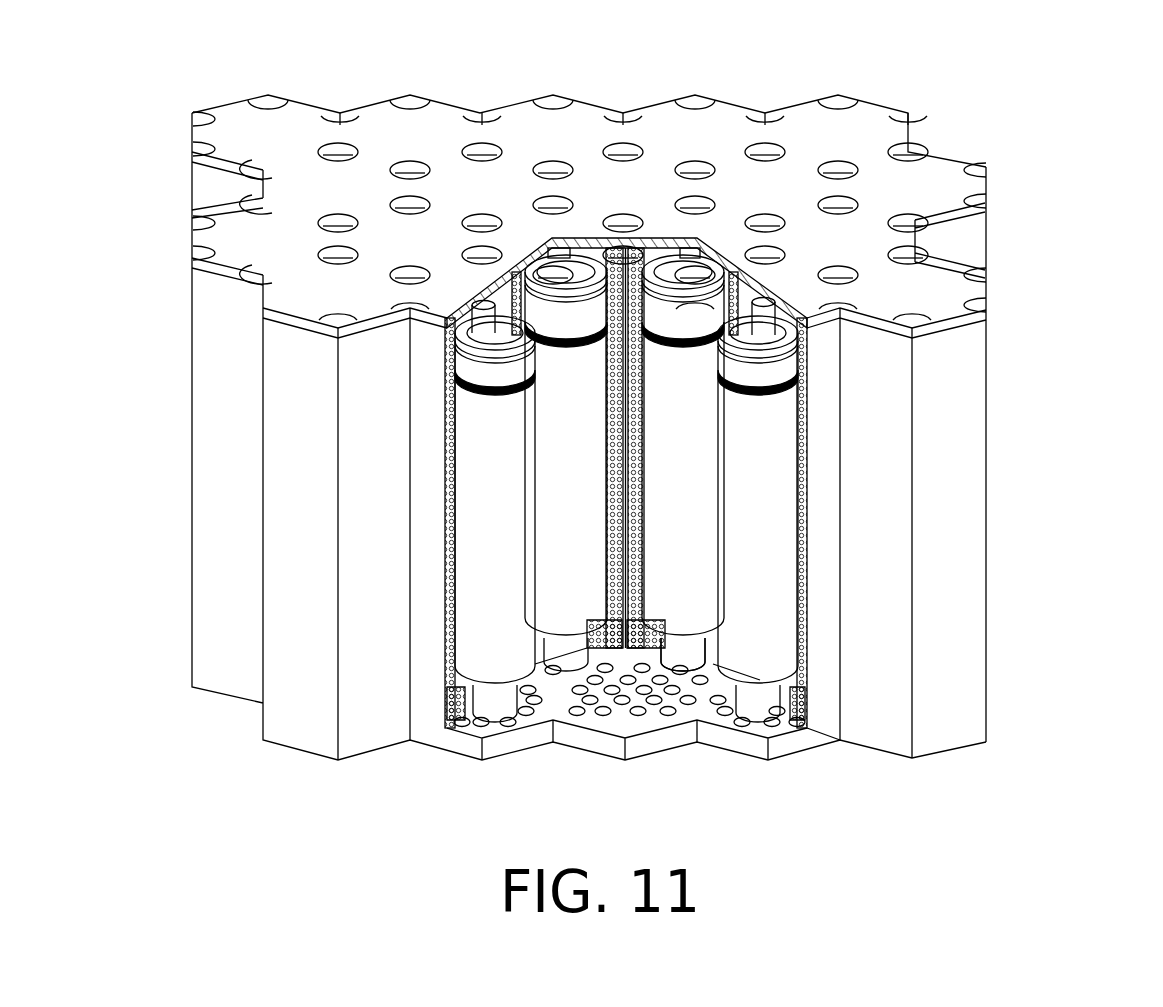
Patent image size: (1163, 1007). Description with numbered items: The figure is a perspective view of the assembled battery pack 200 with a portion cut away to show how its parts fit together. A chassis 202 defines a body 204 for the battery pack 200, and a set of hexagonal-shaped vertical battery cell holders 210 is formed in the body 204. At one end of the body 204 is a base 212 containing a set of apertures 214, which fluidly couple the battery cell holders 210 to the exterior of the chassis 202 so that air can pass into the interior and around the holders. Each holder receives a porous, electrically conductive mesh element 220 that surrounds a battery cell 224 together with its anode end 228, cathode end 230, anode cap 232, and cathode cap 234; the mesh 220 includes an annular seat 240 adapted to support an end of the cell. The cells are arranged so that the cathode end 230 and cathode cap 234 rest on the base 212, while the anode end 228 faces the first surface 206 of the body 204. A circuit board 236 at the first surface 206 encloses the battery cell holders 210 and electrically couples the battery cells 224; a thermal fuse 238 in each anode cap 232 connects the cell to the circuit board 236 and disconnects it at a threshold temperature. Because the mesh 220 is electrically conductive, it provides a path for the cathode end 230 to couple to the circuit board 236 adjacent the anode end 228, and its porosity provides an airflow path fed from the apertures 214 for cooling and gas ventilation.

The battery pack 200 is at (92, 63).
The chassis 202 is at (978, 383).
The body 204 is at (935, 495).
The first surface 206 is at (448, 322).
The vertical battery cell holders 210 is at (615, 350).
The base 212 is at (513, 745).
The apertures 214 is at (340, 150).
The electrically conductive mesh elements 220 is at (607, 655).
The battery cells 224 is at (750, 667).
The anode end 228 is at (655, 276).
The cathode end 230 is at (705, 700).
The anode cap 232 is at (792, 313).
The cathode cap 234 is at (690, 652).
The circuit board 236 is at (935, 192).
The thermal fuse 238 is at (465, 345).
The annular seat 240 is at (800, 718).